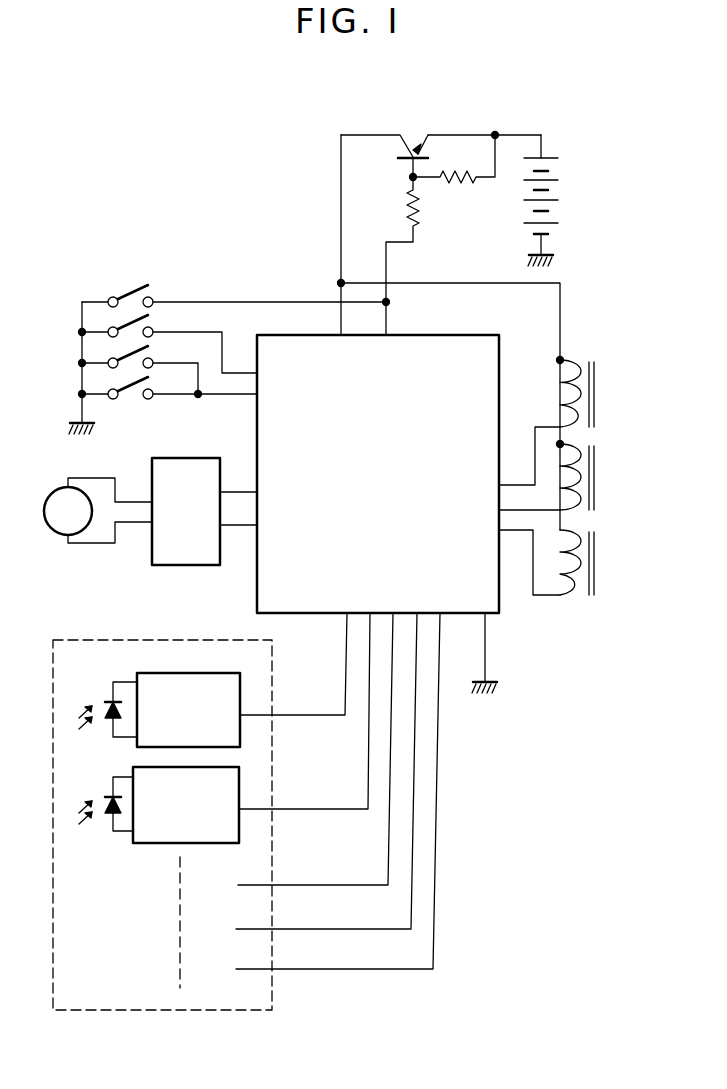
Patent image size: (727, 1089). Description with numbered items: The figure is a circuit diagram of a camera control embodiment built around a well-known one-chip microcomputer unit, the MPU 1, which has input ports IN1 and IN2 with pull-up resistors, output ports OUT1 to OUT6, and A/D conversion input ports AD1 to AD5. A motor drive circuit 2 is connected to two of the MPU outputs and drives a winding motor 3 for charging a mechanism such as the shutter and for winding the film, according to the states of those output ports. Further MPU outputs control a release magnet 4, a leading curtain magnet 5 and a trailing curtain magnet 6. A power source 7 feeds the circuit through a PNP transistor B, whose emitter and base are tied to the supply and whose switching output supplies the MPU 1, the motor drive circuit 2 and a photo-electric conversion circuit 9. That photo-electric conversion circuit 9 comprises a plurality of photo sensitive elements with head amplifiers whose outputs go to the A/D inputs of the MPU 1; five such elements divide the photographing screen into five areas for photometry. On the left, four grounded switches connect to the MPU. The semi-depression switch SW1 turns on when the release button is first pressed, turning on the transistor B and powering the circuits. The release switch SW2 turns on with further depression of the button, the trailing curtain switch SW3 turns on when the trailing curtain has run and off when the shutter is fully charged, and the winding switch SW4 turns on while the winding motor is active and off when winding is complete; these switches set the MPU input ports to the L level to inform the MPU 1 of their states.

The one-chip microcomputer unit (MPU) 1 is at (441, 335).
The motor drive circuit 2 is at (186, 458).
The winding motor 3 is at (50, 492).
The release magnet 4 is at (600, 385).
The leading curtain magnet 5 is at (600, 470).
The trailing curtain magnet 6 is at (600, 555).
The power source 7 is at (562, 198).
The photo-electric conversion circuit 9 is at (203, 640).
The transistor B is at (415, 135).
The semi-depression switch SW1 is at (92, 297).
The release switch SW2 is at (92, 327).
The trailing curtain switch SW3 is at (92, 358).
The winding switch SW4 is at (92, 390).